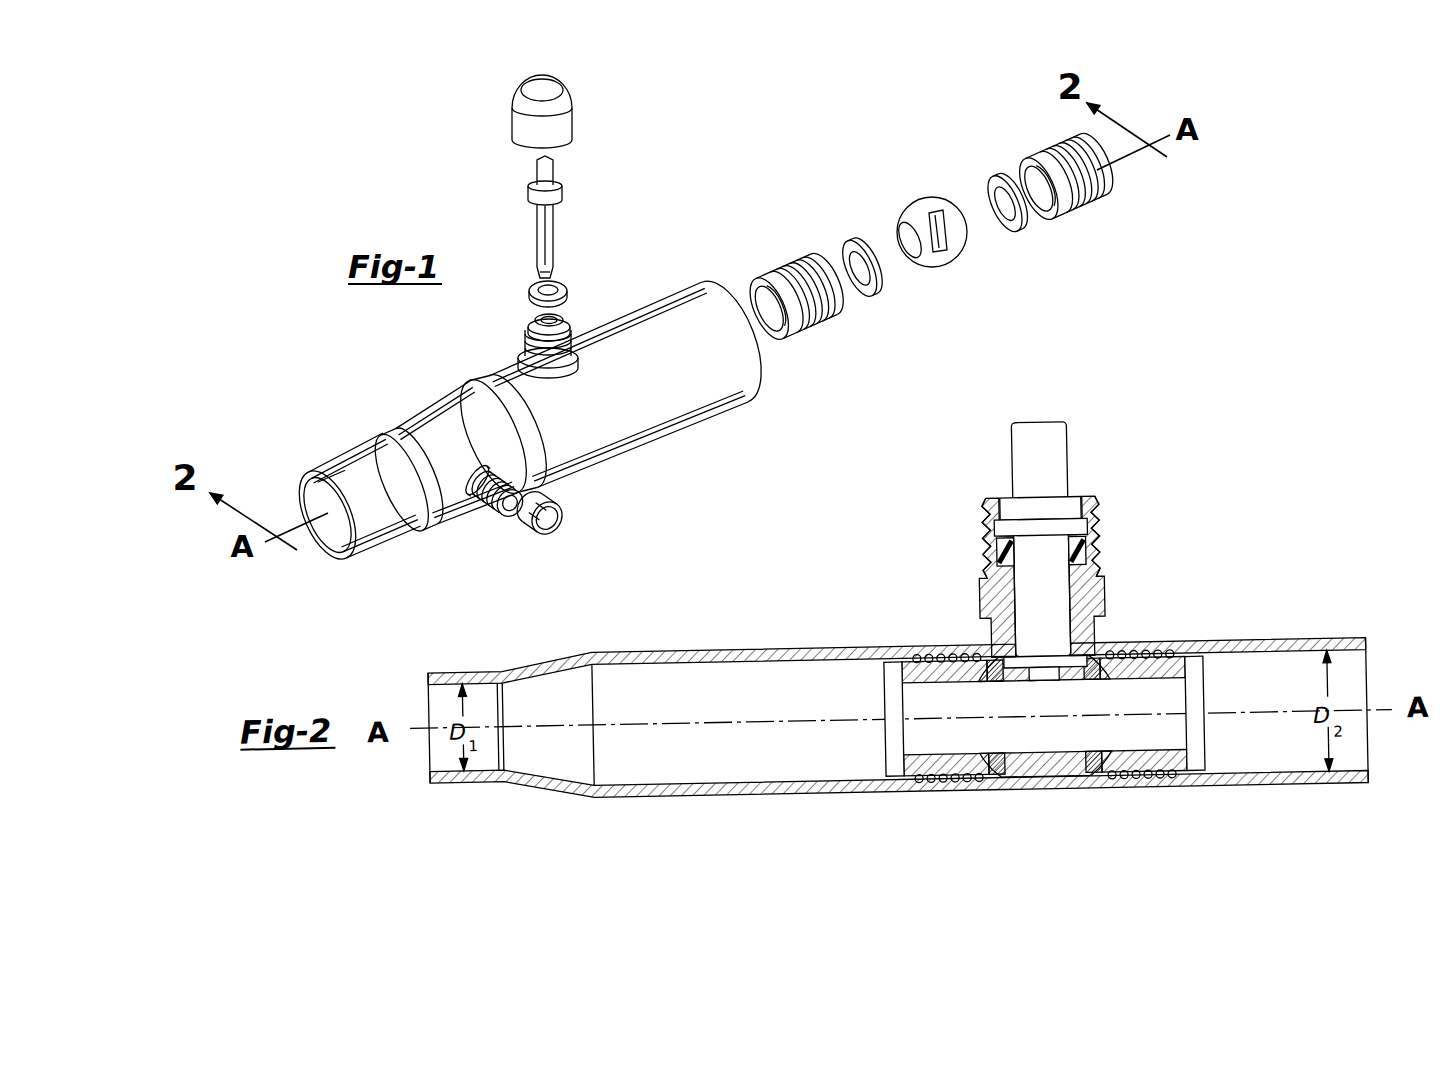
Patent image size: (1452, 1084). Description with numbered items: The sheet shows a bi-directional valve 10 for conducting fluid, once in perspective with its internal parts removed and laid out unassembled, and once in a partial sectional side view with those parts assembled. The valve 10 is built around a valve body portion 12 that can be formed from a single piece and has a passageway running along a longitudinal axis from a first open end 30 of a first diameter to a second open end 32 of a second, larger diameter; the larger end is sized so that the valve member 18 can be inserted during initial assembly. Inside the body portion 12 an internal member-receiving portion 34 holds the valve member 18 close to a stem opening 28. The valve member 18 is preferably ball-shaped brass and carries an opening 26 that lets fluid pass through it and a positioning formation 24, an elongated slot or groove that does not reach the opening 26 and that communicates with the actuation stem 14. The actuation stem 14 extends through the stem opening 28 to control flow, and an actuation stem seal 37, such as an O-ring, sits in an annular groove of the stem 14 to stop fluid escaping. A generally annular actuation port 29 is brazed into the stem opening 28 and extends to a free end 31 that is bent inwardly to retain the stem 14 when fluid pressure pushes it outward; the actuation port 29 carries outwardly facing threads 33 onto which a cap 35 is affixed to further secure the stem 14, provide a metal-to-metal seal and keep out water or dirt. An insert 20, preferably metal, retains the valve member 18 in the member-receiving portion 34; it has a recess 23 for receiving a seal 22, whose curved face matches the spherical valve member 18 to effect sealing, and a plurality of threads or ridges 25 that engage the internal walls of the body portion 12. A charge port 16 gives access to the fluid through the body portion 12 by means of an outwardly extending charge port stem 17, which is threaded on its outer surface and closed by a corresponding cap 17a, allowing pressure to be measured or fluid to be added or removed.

In FIG. 1, the bi-directional valve 10 is at (450, 136).
In FIG. 2, the bi-directional valve 10 is at (1220, 501).
In FIG. 1, the valve body portion 12 is at (418, 388).
In FIG. 2, the valve body portion 12 is at (730, 628).
In FIG. 1, the actuation stem 14 is at (548, 232).
In FIG. 2, the actuation stem 14 is at (1050, 605).
In FIG. 1, the charge port 16 is at (530, 548).
In FIG. 1, the charge port stem 17 is at (487, 510).
In FIG. 1, the cap 17a is at (556, 506).
In FIG. 1, the valve member 18 is at (920, 200).
In FIG. 2, the valve member 18 is at (1068, 780).
In FIG. 1, the insert 20 is at (805, 262).
In FIG. 2, the insert 20 is at (926, 772).
In FIG. 1, the seal 22 is at (850, 240).
In FIG. 2, the seal 22 is at (995, 662).
In FIG. 1, the recess 23 is at (1036, 212).
In FIG. 1, the positioning formation 24 is at (950, 240).
In FIG. 2, the positioning formation 24 is at (1046, 722).
In FIG. 1, the threads or ridges 25 is at (822, 330).
In FIG. 2, the threads or ridges 25 is at (930, 647).
In FIG. 1, the opening 26 is at (912, 250).
In FIG. 1, the stem opening 28 is at (528, 346).
In FIG. 2, the stem opening 28 is at (984, 600).
In FIG. 1, the actuation port 29 is at (565, 320).
In FIG. 2, the actuation port 29 is at (1094, 548).
In FIG. 1, the first open end 30 is at (330, 517).
In FIG. 2, the first open end 30 is at (428, 719).
In FIG. 2, the free end 31 is at (1012, 500).
In FIG. 1, the second open end 32 is at (728, 290).
In FIG. 2, the second open end 32 is at (1368, 655).
In FIG. 2, the threads 33 is at (993, 537).
In FIG. 2, the member-receiving portion 34 is at (1086, 662).
In FIG. 1, the cap 35 is at (558, 122).
In FIG. 1, the actuation stem seal 37 is at (565, 288).
In FIG. 2, the actuation stem seal 37 is at (1000, 560).